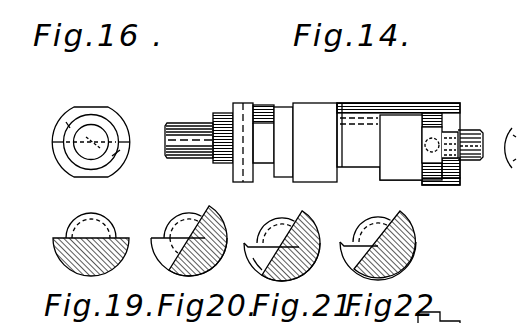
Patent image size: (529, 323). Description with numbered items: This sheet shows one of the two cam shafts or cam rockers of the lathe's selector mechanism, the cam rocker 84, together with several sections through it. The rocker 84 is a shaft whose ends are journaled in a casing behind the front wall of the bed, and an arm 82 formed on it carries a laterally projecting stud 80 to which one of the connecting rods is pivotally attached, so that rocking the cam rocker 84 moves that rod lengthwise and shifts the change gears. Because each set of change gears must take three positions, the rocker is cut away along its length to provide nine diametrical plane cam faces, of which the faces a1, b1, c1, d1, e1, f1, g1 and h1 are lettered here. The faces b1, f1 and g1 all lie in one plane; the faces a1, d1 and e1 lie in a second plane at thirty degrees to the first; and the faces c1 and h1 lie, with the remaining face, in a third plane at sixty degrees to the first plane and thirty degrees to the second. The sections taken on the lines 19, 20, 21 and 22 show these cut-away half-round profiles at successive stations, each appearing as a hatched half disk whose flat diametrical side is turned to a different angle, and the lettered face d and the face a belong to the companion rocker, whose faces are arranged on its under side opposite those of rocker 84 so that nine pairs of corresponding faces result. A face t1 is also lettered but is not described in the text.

In FIG. 14, the section line 19— 19 is at (235, 63).
In FIG. 14, the section line 20— 20 is at (264, 196).
In FIG. 14, the section line 21— 21 is at (283, 196).
In FIG. 14, the section line 22— 22 is at (298, 60).
In FIG. 14, the stud 80 is at (453, 132).
In FIG. 22, the stud 80 is at (462, 322).
In FIG. 14, the arm 82 is at (432, 127).
In FIG. 22, the arm 82 is at (438, 313).
In FIG. 14, the cam shaft or cam rocker 84 is at (398, 131).
In FIG. 14, the cam face a1 is at (230, 169).
In FIG. 19, the cam face a1 is at (129, 237).
In FIG. 21, the cam face a is at (256, 241).
In FIG. 22, the cam face a is at (343, 246).
In FIG. 20, the cam face b1 is at (196, 224).
In FIG. 21, the cam face b1 is at (267, 234).
In FIG. 21, the cam face c1 is at (252, 258).
In FIG. 22, the cam face c1 is at (343, 243).
In FIG. 14, the cam face d is at (347, 185).
In FIG. 22, the cam face d is at (389, 218).
In FIG. 14, the cam face d1 is at (264, 133).
In FIG. 14, the cam face e1 is at (330, 106).
In FIG. 22, the cam face e1 is at (415, 229).
In FIG. 14, the cam face f1 is at (350, 137).
In FIG. 14, the cam face g1 is at (366, 137).
In FIG. 14, the cam face h1 is at (390, 173).
In FIG. 22, the cam face h1 is at (389, 211).
In FIG. 14, the tongue t1 is at (413, 173).
In FIG. 22, the tongue t1 is at (398, 208).